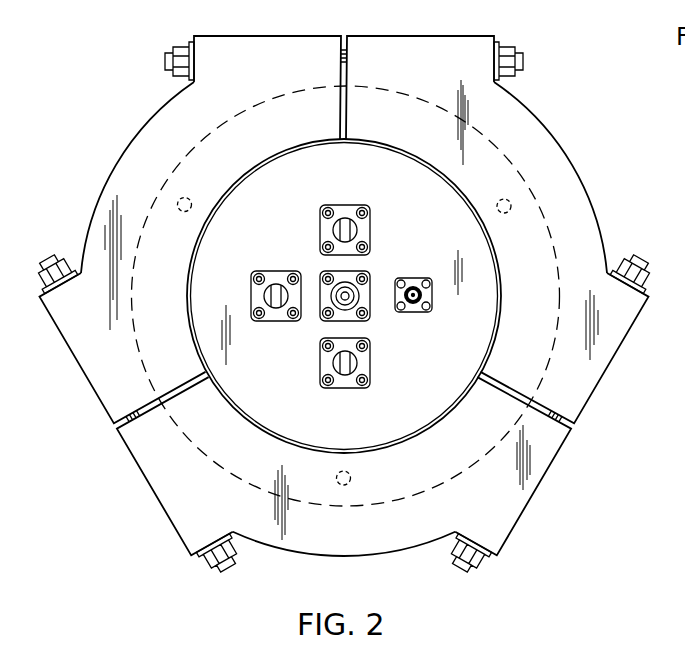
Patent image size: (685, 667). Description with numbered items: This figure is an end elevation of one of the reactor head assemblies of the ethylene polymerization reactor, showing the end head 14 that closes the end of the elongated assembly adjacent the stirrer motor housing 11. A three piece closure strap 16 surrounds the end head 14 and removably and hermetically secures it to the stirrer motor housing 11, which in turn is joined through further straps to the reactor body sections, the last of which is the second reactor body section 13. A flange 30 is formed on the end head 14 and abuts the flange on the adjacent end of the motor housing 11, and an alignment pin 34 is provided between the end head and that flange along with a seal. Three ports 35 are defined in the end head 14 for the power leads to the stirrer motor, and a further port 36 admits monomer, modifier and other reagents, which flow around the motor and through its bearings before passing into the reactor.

The stirrer motor housing 11 is at (142, 7).
The second reactor body section 13 is at (607, 8).
The end head 14 is at (437, 231).
The strap 16 is at (588, 190).
The flange 30 is at (490, 148).
The alignment pin 34 is at (512, 207).
The port 35 is at (333, 233).
The port 36 is at (323, 318).